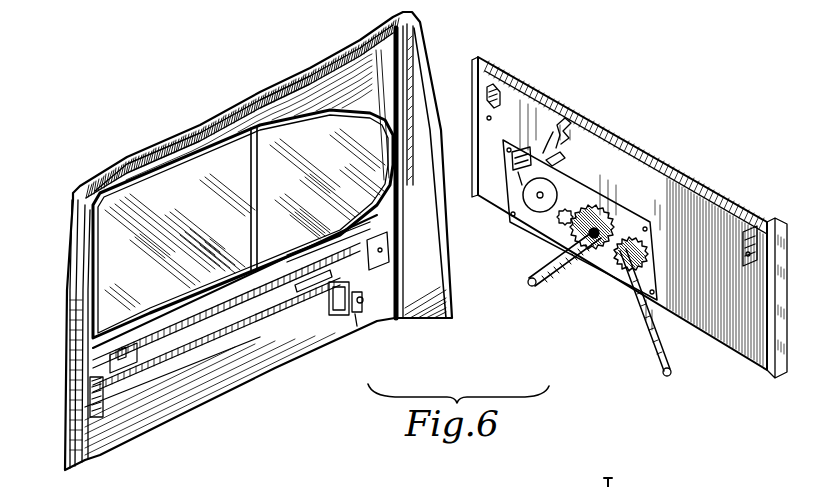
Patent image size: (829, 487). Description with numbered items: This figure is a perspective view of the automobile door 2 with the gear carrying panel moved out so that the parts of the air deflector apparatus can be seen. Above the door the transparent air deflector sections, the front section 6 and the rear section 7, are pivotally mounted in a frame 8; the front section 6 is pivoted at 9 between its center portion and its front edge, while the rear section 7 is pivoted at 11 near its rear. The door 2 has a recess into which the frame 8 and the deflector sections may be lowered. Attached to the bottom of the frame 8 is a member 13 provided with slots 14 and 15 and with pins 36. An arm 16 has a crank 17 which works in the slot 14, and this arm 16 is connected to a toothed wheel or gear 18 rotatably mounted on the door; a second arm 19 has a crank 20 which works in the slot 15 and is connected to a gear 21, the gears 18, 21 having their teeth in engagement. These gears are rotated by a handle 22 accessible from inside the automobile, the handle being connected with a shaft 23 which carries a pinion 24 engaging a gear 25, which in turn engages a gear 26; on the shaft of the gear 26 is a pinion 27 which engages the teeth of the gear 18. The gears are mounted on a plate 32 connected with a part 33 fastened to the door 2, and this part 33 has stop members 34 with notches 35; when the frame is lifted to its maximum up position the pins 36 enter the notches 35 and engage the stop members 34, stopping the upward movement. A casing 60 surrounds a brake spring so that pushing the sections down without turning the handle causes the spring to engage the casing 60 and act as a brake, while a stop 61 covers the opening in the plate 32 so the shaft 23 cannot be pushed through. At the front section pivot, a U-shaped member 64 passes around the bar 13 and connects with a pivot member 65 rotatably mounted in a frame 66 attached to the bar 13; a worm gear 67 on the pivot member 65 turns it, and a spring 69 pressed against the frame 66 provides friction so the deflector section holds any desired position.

The door 2 is at (163, 138).
The front air deflector section 6 is at (327, 184).
The rear air deflector section 7 is at (181, 218).
The frame 8 is at (202, 157).
The pivot of front deflector section 9 is at (355, 115).
The pivot of rear deflector section 11 is at (122, 180).
The member (bar) 13 is at (265, 317).
The slot 14 is at (311, 294).
The slot 15 is at (180, 352).
The arm 16 is at (550, 272).
The crank 17 is at (532, 286).
The toothed wheel or gear 18 is at (593, 258).
The second arm 19 is at (660, 352).
The crank 20 is at (667, 376).
The toothed wheel or gear 21 is at (648, 254).
The handle 22 is at (560, 137).
The shaft 23 is at (557, 158).
The pinion 24 is at (514, 168).
The gear 25 is at (545, 212).
The gear 26 is at (585, 206).
The pinion 27 is at (562, 226).
The plate 32 is at (624, 220).
The part 33 is at (707, 187).
The stop member 34 is at (500, 88).
The notch 35 is at (486, 117).
The pin 36 is at (110, 377).
The casing 60 is at (543, 153).
The stop 61 is at (521, 186).
The U-shaped member 64 is at (350, 248).
The pivot member 65 is at (357, 314).
The frame 66 is at (333, 316).
The worm gear 67 is at (357, 326).
The spring 69 is at (352, 320).